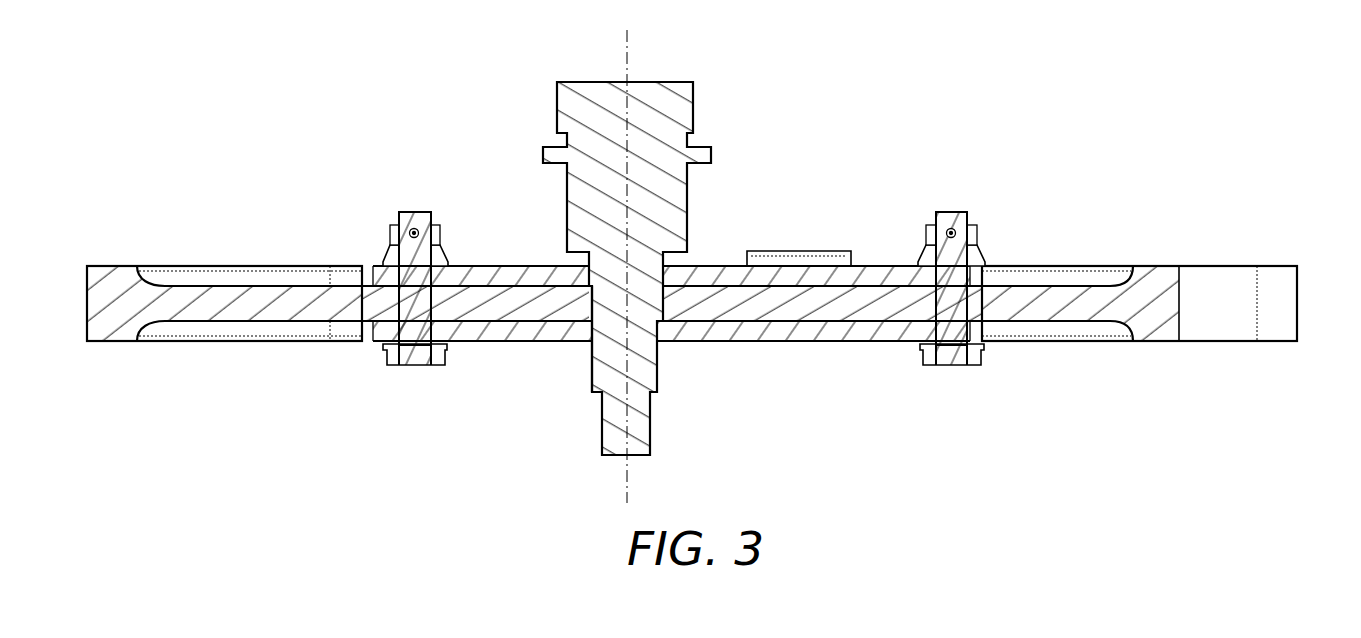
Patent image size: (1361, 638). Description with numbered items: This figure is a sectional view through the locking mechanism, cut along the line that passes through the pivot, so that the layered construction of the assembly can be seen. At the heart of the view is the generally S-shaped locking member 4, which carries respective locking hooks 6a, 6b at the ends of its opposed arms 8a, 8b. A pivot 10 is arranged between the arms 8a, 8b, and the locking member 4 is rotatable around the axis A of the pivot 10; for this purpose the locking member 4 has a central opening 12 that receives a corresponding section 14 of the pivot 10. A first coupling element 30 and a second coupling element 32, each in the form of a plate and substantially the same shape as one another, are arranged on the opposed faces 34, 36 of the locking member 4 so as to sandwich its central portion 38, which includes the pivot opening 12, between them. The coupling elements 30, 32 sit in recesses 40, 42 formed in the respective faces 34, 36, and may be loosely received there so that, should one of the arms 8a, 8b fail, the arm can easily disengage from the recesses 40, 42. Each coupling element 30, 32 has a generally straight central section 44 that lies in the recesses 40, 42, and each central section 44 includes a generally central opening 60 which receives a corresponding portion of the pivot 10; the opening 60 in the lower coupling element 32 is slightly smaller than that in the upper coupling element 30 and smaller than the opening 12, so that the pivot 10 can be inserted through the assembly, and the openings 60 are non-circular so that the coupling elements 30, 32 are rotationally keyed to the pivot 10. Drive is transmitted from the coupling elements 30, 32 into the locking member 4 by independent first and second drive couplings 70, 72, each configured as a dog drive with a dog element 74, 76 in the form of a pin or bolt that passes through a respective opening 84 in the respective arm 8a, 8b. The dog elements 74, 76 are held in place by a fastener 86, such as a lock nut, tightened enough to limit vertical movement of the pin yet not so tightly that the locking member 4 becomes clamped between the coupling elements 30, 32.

The axis A is at (631, 42).
The locking member 4 is at (833, 310).
The locking hook 6a is at (100, 301).
The locking hook 6b is at (1285, 304).
The arm 8a is at (280, 312).
The arm 8b is at (1080, 315).
The pivot 10 is at (678, 180).
The central opening 12 is at (662, 305).
The section 14 is at (604, 306).
The first coupling element 30 is at (869, 278).
The second coupling element 32 is at (795, 342).
The face 34 is at (217, 275).
The face 36 is at (216, 342).
The central portion 38 is at (482, 300).
The recess 40 is at (1056, 278).
The recess 42 is at (1031, 342).
The central section 44 is at (532, 270).
The central opening 60 is at (665, 278).
The first drive coupling 70 is at (391, 195).
The second drive coupling 72 is at (926, 196).
The dog element 74 is at (415, 212).
The dog element 76 is at (949, 212).
The opening 84 is at (395, 305).
The fastener 86 is at (398, 236).